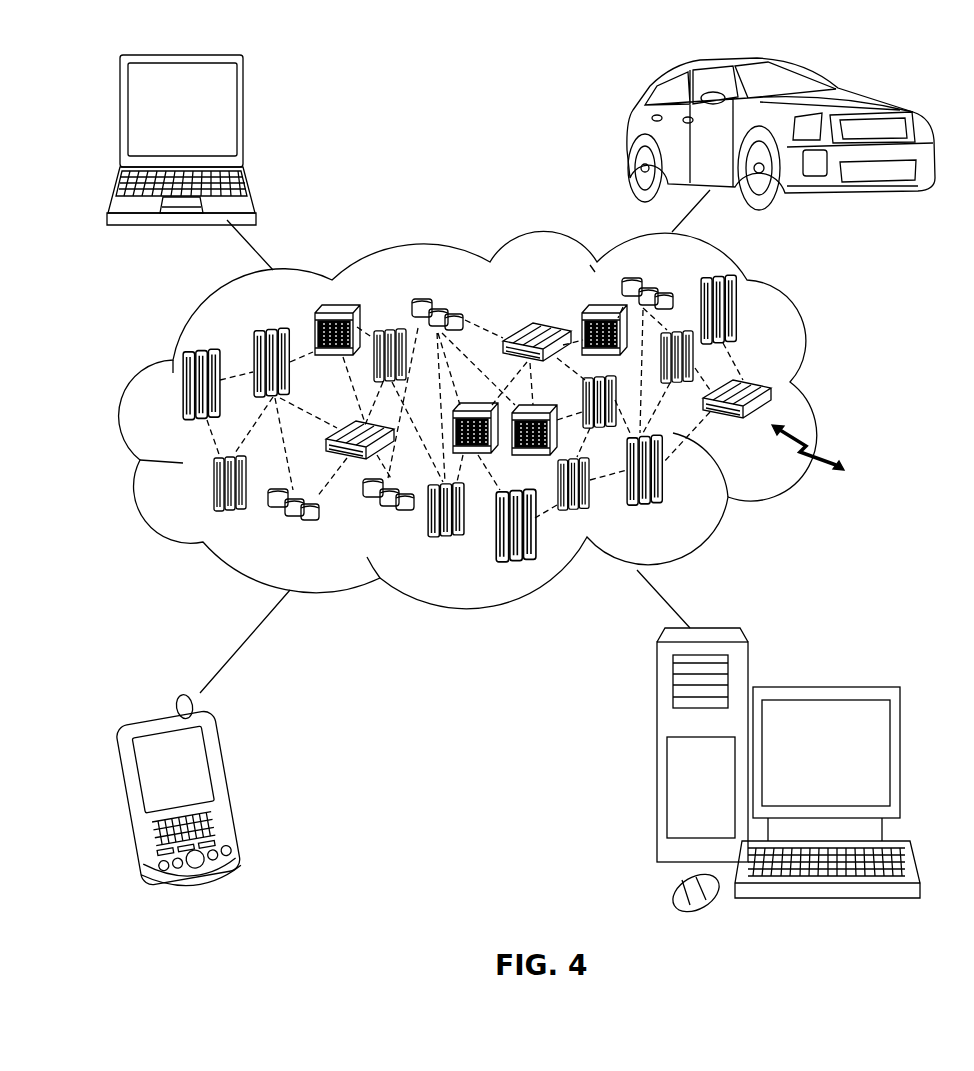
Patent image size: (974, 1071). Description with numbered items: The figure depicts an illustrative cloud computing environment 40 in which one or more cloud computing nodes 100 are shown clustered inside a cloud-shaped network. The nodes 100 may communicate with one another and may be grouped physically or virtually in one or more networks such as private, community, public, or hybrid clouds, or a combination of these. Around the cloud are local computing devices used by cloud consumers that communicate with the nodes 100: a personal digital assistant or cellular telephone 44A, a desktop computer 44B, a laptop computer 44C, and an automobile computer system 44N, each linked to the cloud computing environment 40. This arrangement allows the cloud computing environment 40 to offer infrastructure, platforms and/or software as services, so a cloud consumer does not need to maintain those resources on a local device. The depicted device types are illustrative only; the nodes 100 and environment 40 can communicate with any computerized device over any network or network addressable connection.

The cloud computing environment 40 is at (825, 393).
The personal digital assistant or cellular telephone 44A is at (233, 783).
The desktop computer 44B is at (823, 687).
The laptop computer 44C is at (243, 118).
The automobile computer system 44N is at (633, 130).
The cloud computing nodes 100 is at (828, 448).